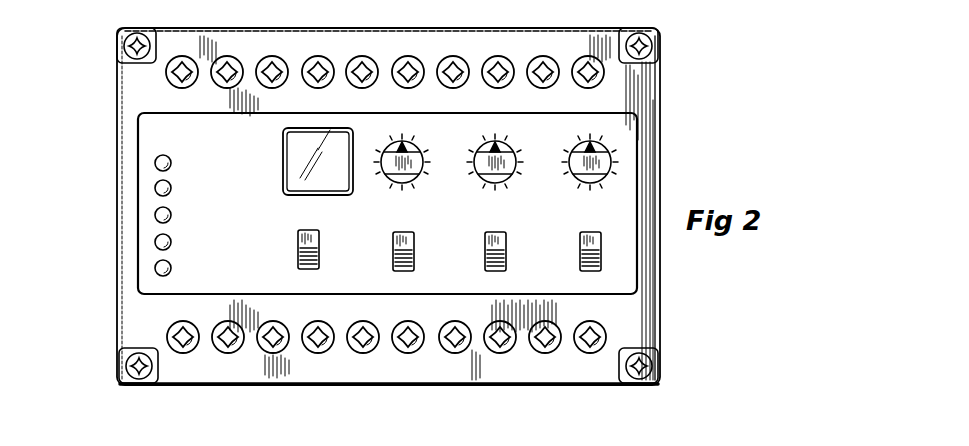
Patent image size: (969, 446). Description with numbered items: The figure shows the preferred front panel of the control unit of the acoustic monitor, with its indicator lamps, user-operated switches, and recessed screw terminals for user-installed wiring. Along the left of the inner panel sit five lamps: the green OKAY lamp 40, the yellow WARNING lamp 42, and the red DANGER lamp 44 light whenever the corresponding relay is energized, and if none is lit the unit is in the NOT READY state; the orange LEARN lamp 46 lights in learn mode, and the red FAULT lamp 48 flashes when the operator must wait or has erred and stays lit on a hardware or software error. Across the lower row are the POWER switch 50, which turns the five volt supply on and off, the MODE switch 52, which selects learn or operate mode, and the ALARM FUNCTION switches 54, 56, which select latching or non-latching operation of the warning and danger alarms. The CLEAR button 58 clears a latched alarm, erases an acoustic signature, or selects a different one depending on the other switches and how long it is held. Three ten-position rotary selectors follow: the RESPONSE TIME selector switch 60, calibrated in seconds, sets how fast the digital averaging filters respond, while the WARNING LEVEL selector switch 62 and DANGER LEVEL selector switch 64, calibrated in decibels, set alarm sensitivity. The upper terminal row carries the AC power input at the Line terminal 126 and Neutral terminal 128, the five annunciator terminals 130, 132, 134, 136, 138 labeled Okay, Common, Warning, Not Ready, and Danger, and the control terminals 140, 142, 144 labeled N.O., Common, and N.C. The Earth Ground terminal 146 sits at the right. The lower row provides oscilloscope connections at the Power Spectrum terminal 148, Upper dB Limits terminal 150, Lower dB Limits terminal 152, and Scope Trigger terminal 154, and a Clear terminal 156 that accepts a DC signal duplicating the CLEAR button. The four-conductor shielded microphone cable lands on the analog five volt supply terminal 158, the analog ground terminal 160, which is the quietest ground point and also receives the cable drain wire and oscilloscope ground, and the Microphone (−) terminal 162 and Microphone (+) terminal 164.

The OKAY lamp 40 is at (155, 215).
The WARNING lamp 42 is at (157, 188).
The DANGER lamp 44 is at (156, 160).
The LEARN lamp 46 is at (156, 242).
The FAULT lamp 48 is at (155, 268).
The POWER switch 50 is at (296, 252).
The MODE switch 52 is at (392, 252).
The ALARM FUNCTION switch 54 is at (484, 252).
The ALARM FUNCTION switch 56 is at (579, 252).
The CLEAR button 58 is at (291, 156).
The RESPONSE TIME selector switch 60 is at (383, 170).
The WARNING LEVEL selector switch 62 is at (477, 174).
The DANGER LEVEL selector switch 64 is at (574, 174).
The Line terminal 126 is at (168, 74).
The Neutral terminal 128 is at (215, 82).
The Okay annunciator terminal 130 is at (262, 62).
The Common annunciator terminal 132 is at (307, 62).
The Warning annunciator terminal 134 is at (355, 62).
The Not Ready annunciator terminal 136 is at (420, 60).
The Danger annunciator terminal 138 is at (462, 62).
The N.O. control terminal 140 is at (505, 62).
The Common control terminal 142 is at (555, 88).
The N.C. control terminal 144 is at (606, 76).
The Earth Ground terminal 146 is at (605, 330).
The Power Spectrum terminal 148 is at (552, 352).
The Upper dB Limits terminal 150 is at (503, 352).
The Lower dB Limits terminal 152 is at (450, 352).
The Scope Trigger terminal 154 is at (397, 352).
The Clear terminal 156 is at (352, 352).
The Analog +5V terminal 158 is at (307, 350).
The analog ground terminal 160 is at (257, 350).
The Microphone (−) terminal 162 is at (217, 350).
The Microphone (+) terminal 164 is at (168, 338).